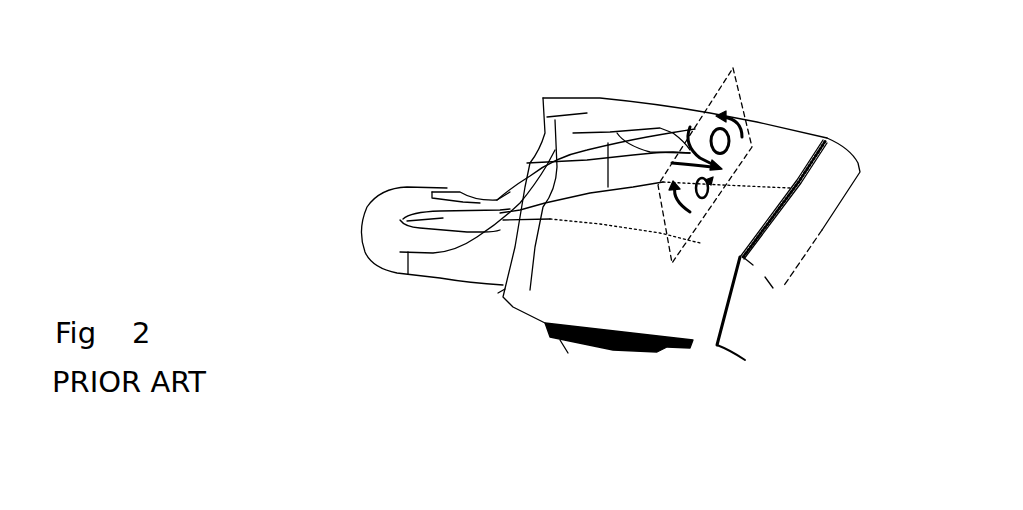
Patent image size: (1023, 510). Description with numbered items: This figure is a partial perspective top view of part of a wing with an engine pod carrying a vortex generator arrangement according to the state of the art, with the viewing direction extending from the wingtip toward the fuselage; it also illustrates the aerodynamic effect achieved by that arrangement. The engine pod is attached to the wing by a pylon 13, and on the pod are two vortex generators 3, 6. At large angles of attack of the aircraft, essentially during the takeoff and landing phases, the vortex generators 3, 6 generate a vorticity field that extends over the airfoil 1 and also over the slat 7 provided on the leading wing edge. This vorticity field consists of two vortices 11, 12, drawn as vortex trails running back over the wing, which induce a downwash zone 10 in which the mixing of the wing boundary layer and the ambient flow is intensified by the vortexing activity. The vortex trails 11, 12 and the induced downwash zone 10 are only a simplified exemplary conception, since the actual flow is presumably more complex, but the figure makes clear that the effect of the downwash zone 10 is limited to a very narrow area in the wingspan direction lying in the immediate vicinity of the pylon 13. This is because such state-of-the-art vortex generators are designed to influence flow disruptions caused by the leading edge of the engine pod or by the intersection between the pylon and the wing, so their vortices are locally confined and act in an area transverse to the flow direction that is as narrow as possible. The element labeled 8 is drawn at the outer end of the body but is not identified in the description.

The airfoil 1 is at (621, 293).
The vortex generator 3 is at (447, 188).
The vortex generator 6 is at (408, 253).
The slat 7 is at (540, 135).
The end portion 8 is at (833, 182).
The downwash zone 10 is at (766, 100).
The vortex 11 is at (590, 153).
The vortex 12 is at (612, 138).
The pylon 13 is at (403, 223).